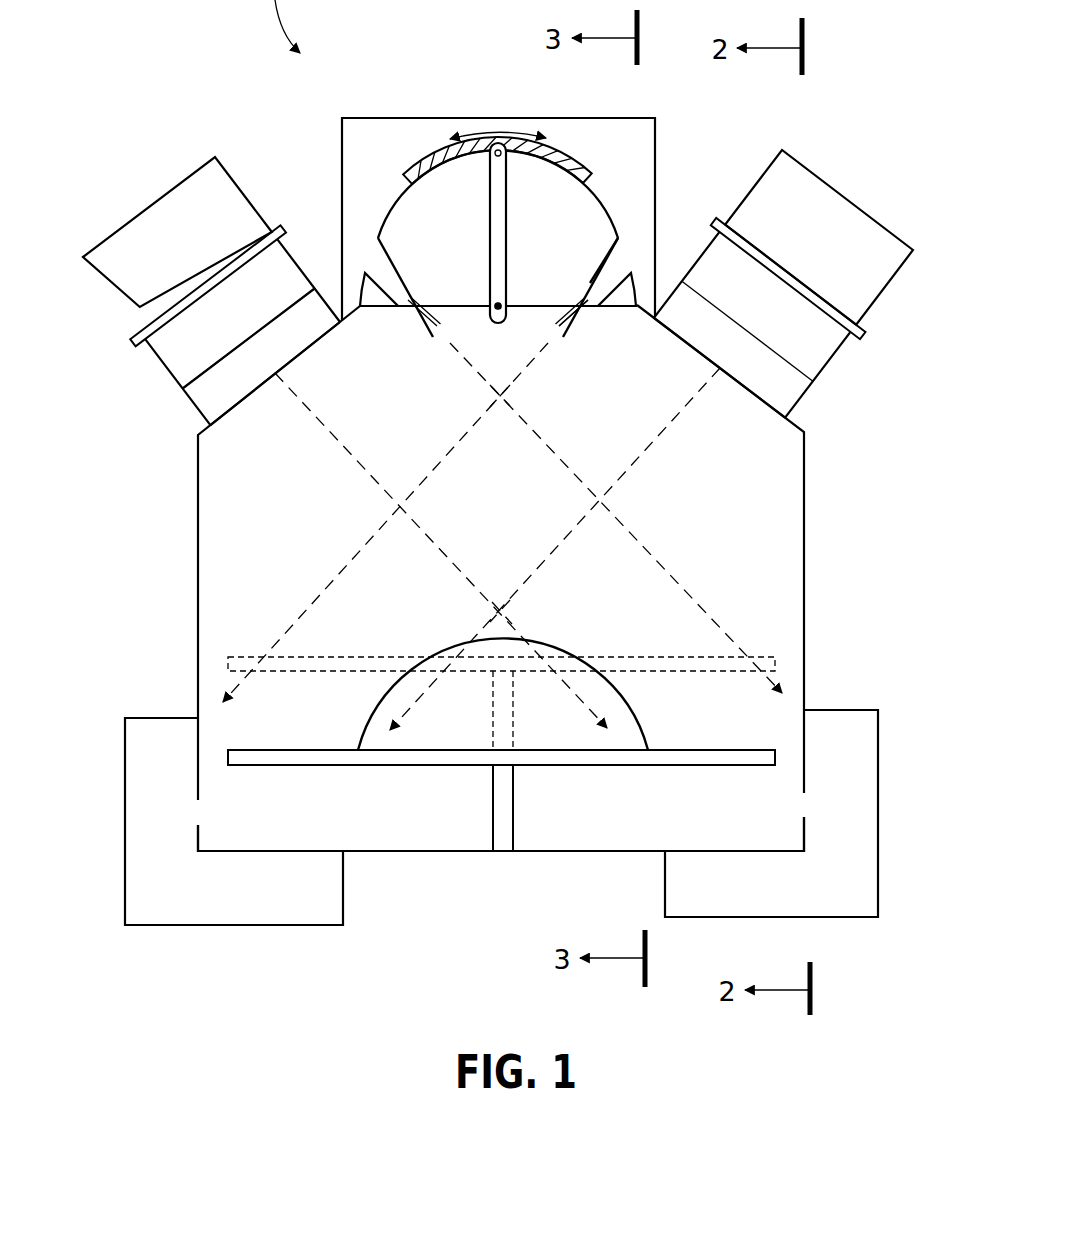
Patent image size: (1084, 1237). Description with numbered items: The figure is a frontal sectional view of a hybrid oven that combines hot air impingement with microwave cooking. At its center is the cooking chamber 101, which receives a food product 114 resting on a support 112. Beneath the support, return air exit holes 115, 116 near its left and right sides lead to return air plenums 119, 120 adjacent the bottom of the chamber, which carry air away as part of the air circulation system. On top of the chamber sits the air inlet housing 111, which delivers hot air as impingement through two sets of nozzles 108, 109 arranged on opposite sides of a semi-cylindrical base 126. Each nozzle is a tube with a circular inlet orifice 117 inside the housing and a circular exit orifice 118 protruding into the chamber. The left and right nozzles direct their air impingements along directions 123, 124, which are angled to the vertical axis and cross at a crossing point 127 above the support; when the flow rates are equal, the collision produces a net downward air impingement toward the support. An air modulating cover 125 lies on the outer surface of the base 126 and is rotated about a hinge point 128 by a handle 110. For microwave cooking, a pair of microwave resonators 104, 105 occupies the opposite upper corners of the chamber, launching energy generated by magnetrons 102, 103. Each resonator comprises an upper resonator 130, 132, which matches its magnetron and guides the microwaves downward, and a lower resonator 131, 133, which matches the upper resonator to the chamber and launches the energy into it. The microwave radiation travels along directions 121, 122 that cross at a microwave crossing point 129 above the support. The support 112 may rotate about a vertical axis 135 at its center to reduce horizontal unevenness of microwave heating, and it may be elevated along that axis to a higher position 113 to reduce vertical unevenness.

The cooking chamber 101 is at (806, 548).
The magnetron 102 is at (152, 222).
The magnetron 103 is at (787, 180).
The microwave resonator 104 is at (143, 360).
The microwave resonator 105 is at (808, 415).
The nozzle 108 is at (400, 292).
The nozzle 109 is at (595, 290).
The handle 110 is at (497, 218).
The air inlet housing 111 is at (362, 118).
The support 112 is at (745, 752).
The higher position 113 is at (708, 662).
The food product 114 is at (382, 720).
The return air exit hole 115 is at (247, 853).
The return air exit hole 116 is at (762, 843).
The inlet orifice 117 is at (617, 267).
The exit orifice 118 is at (561, 335).
The return air plenum 119 is at (247, 905).
The return air plenum 120 is at (847, 905).
The direction 121 is at (313, 407).
The direction 122 is at (677, 430).
The direction 123 is at (680, 585).
The direction 124 is at (295, 620).
The air modulating cover 125 is at (572, 175).
The semi-cylindrical base 126 is at (412, 242).
The crossing point 127 is at (500, 402).
The hinge point 128 is at (497, 312).
The microwave crossing point 129 is at (503, 608).
The upper resonator 130 is at (172, 337).
The lower resonator 131 is at (210, 400).
The upper resonator 132 is at (803, 318).
The lower resonator 133 is at (783, 403).
The vertical axis 135 is at (492, 820).